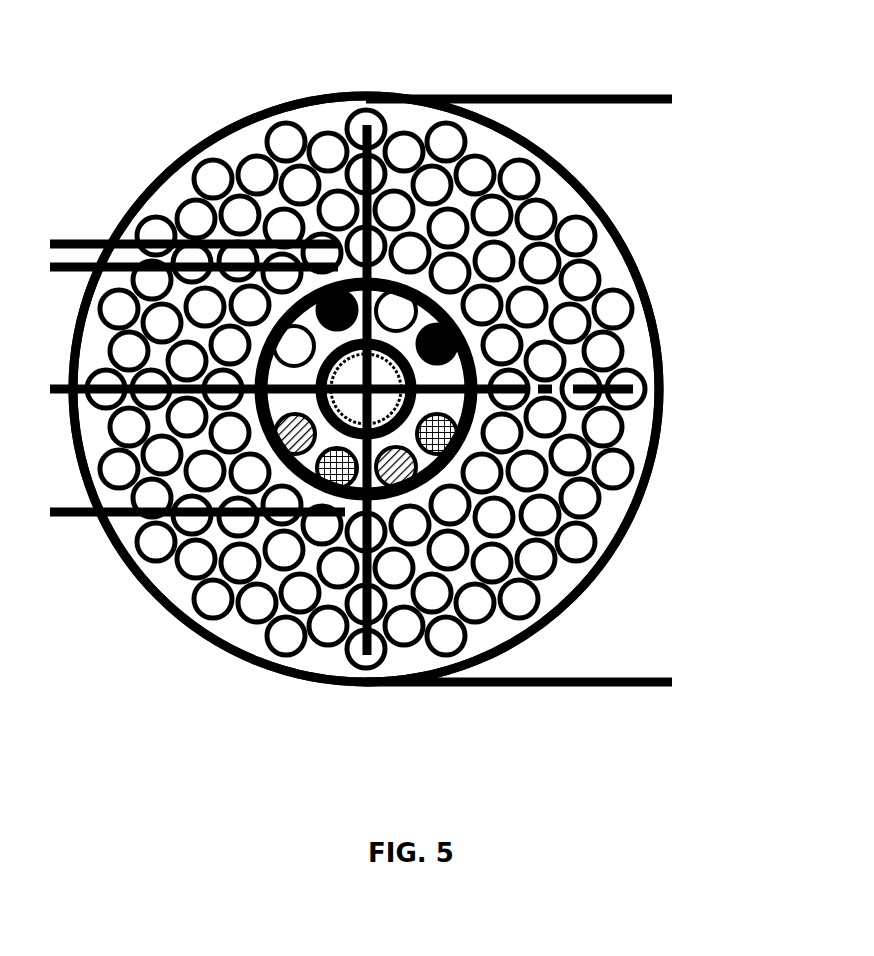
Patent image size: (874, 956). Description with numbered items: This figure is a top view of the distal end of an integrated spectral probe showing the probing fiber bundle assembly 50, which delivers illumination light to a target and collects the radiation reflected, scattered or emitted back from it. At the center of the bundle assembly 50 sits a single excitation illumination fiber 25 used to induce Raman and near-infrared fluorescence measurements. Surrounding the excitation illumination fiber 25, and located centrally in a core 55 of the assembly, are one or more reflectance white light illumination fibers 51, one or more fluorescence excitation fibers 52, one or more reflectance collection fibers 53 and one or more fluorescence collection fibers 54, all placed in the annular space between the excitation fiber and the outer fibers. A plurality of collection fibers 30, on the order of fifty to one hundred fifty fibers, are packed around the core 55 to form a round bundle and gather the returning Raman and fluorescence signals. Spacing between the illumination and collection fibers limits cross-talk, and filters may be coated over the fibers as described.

The probing fiber bundle assembly 50 is at (766, 120).
The collection fibers 30 is at (173, 170).
The excitation illumination fiber 25 is at (352, 398).
The reflectance illumination fibers 51 is at (418, 297).
The fluorescence excitation fibers 52 is at (459, 337).
The reflectance collection fibers 53 is at (461, 440).
The fluorescence collection fibers 54 is at (418, 478).
The core 55 is at (314, 302).